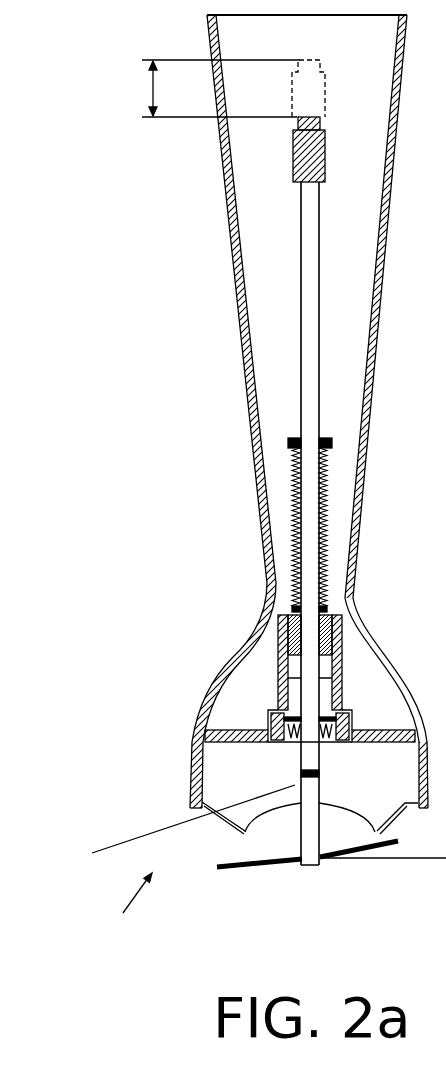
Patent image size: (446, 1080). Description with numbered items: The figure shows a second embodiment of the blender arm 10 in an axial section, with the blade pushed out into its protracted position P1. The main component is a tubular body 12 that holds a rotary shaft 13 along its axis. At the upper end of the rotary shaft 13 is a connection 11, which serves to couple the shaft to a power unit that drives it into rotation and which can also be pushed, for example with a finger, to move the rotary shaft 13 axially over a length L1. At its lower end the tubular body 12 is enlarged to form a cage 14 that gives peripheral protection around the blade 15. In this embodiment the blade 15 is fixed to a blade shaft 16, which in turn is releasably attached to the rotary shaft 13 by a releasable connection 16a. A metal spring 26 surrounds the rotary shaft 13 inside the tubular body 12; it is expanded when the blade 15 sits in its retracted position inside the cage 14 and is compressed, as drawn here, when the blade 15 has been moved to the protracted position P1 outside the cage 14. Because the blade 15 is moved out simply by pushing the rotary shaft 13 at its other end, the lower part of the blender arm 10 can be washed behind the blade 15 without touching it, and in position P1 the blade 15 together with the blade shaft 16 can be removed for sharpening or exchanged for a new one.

The blender arm 10 is at (204, 437).
The connection 11 is at (295, 160).
The tubular body 12 is at (245, 369).
The rotary shaft 13 is at (301, 267).
The cage 14 is at (190, 774).
The blade 15 is at (270, 862).
The blade shaft 16 is at (301, 840).
The releasable connection 16a is at (165, 839).
The metal spring 26 is at (296, 567).
The length L1 is at (209, 88).
The protracted position P1 is at (128, 909).